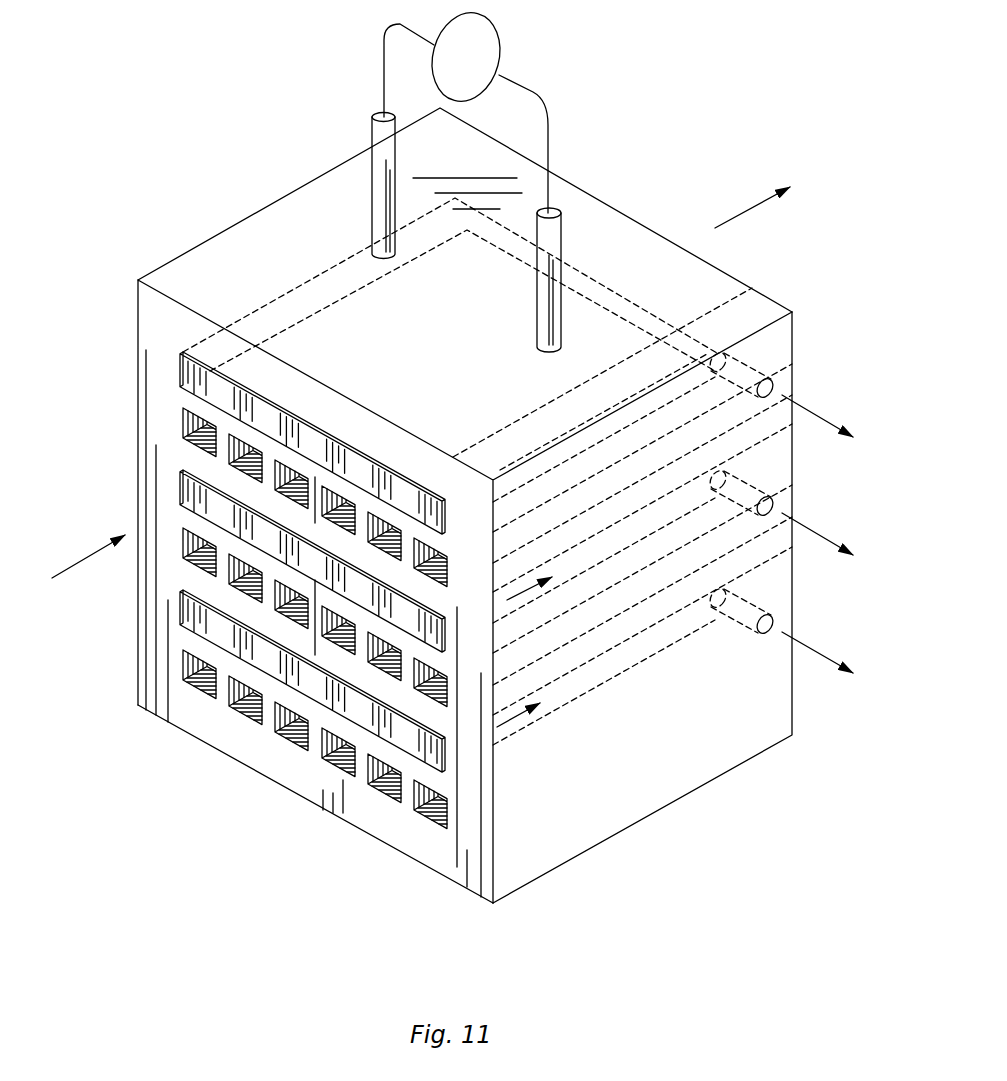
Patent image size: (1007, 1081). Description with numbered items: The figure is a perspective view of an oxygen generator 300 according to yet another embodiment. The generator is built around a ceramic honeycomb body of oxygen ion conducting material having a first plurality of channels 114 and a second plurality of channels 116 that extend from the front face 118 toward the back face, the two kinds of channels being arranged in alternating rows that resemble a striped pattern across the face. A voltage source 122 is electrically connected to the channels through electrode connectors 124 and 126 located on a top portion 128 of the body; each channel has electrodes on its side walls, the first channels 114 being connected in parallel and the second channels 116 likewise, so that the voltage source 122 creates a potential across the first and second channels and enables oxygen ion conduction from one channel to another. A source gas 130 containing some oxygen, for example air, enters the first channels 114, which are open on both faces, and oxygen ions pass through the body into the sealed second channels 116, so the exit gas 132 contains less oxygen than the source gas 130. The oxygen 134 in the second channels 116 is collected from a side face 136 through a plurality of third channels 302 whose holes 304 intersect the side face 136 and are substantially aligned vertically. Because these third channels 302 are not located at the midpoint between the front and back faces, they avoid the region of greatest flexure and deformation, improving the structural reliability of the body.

The oxygen generator 300 is at (166, 190).
The voltage source 122 is at (499, 41).
The electrode connector 124 is at (540, 292).
The electrode connector 126 is at (372, 135).
The top portion 128 is at (313, 193).
The third channels 302 is at (603, 280).
The holes 304 is at (770, 385).
The exit gas 132 is at (667, 447).
The oxygen 134 is at (808, 413).
The source gas 130 is at (77, 570).
The second plurality of channels 116 is at (207, 342).
The first plurality of channels 114 is at (183, 428).
The front face 118 is at (283, 760).
The side face 136 is at (548, 842).